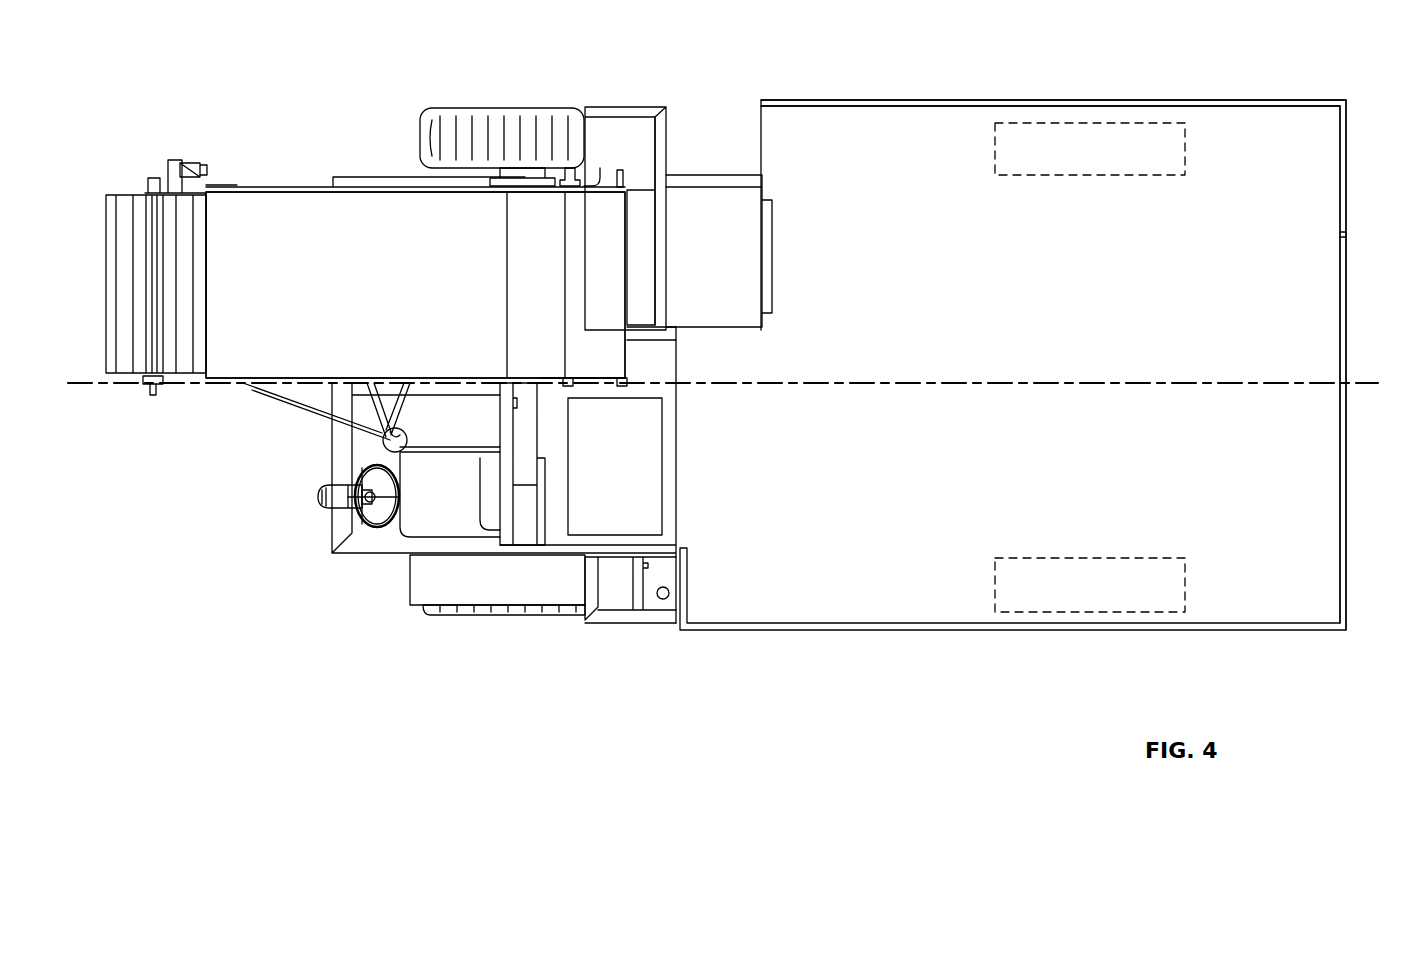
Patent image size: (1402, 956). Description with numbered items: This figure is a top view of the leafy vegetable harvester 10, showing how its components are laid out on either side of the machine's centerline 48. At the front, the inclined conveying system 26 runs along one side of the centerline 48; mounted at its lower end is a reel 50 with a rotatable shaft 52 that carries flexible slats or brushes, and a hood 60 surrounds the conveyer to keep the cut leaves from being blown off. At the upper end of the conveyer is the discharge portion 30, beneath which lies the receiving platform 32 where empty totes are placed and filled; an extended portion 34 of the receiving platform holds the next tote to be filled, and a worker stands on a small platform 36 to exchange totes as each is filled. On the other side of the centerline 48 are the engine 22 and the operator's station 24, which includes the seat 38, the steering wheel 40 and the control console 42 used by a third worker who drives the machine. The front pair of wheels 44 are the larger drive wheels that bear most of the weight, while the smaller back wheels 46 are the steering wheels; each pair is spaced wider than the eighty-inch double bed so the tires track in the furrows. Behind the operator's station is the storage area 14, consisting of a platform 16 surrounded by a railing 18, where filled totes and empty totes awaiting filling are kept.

The leafy vegetable harvester 10 is at (225, 488).
The storage area 14 is at (1040, 88).
The platform 16 is at (1333, 255).
The railing 18 is at (1172, 100).
The engine 22 is at (630, 459).
The operator's station 24 is at (365, 555).
The inclined conveying system 26 is at (256, 172).
The discharge portion 30 is at (580, 384).
The receiving platform 32 is at (666, 150).
The extended portion 34 is at (627, 107).
The small platform 36 is at (752, 322).
The seat 38 is at (445, 452).
The steering wheel 40 is at (357, 520).
The control console 42 is at (345, 485).
The front pair of wheels 44 is at (490, 108).
The back wheels 46 is at (995, 153).
The centerline 48 is at (90, 385).
The reel 50 is at (120, 184).
The rotatable shaft 52 is at (150, 395).
The hood 60 is at (372, 192).